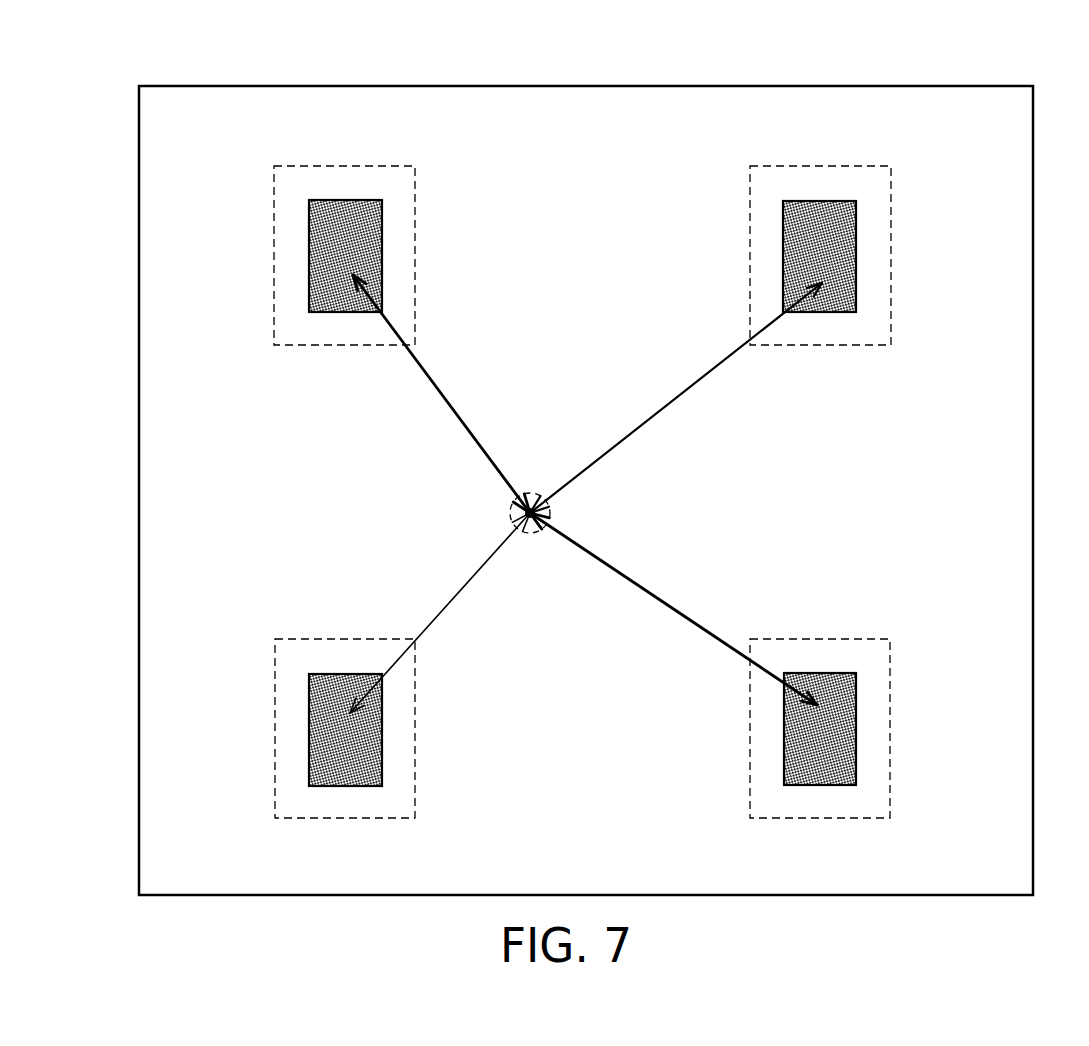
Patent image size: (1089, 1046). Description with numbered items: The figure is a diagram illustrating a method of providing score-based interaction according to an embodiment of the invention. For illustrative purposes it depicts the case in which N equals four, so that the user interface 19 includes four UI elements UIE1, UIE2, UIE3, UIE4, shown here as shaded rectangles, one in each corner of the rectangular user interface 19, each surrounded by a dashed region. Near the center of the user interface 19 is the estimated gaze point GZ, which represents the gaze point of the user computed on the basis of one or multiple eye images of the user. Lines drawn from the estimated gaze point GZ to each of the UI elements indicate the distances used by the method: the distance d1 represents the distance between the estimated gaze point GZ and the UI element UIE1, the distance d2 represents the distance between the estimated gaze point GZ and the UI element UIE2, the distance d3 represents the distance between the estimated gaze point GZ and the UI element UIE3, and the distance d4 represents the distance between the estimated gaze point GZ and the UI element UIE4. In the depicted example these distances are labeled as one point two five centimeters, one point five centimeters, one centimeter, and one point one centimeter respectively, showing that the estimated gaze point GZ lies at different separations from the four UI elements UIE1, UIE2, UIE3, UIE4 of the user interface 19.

The user interface 19 is at (960, 85).
The UI element UIE1 is at (300, 166).
The UI element UIE2 is at (813, 166).
The UI element UIE3 is at (300, 639).
The UI element UIE4 is at (813, 639).
The estimated gaze point GZ is at (532, 493).
The distance d1 is at (418, 368).
The distance d2 is at (615, 447).
The distance d3 is at (437, 615).
The distance d4 is at (640, 587).